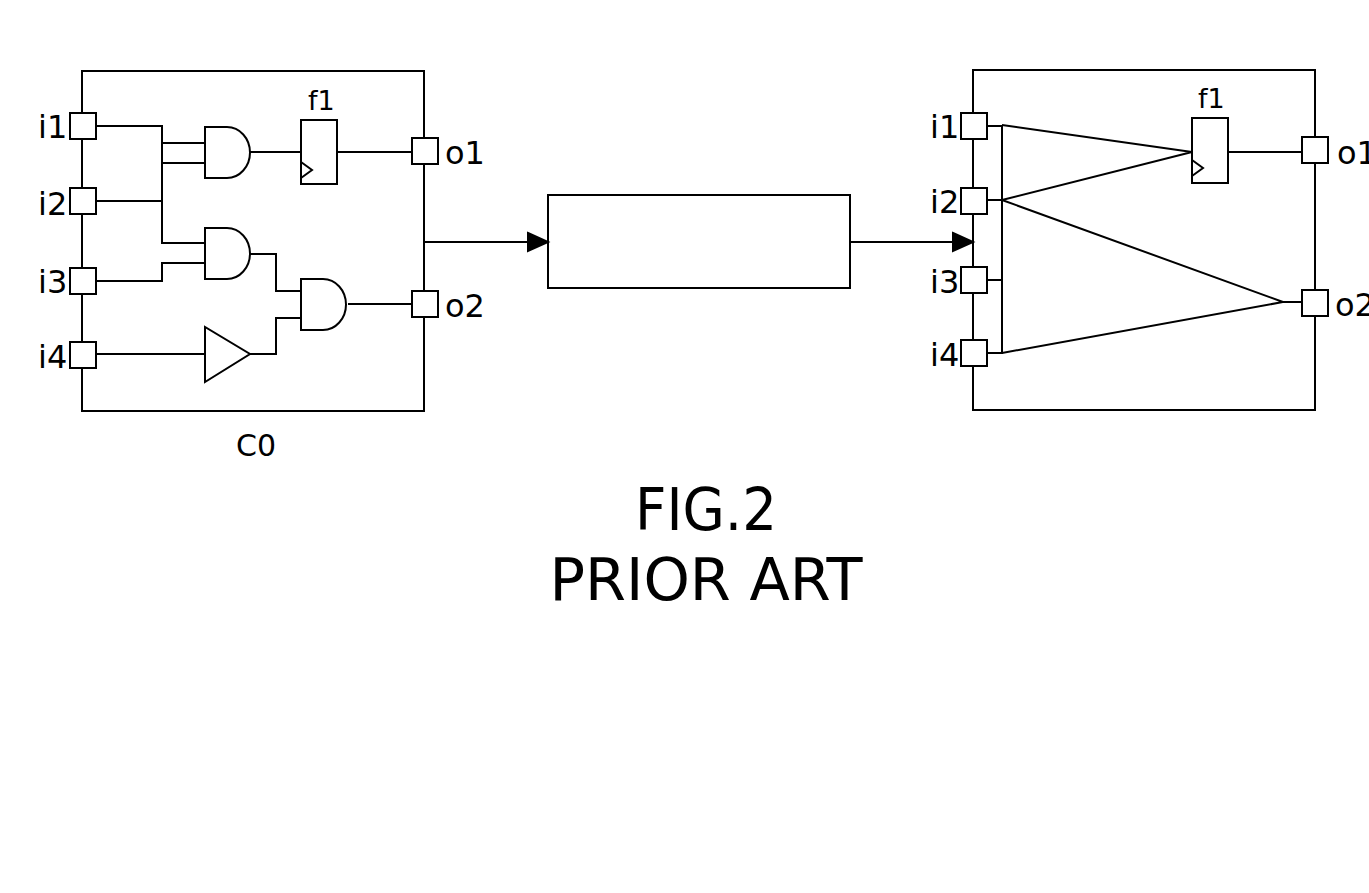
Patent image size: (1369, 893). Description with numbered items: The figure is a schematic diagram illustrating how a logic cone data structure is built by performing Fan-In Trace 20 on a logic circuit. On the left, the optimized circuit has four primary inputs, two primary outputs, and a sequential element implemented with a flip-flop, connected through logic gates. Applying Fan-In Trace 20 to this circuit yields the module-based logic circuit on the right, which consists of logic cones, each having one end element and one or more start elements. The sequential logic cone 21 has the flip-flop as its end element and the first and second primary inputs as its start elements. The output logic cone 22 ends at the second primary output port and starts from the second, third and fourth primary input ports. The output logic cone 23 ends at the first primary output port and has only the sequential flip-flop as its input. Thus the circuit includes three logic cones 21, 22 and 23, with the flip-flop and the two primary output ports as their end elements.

The Fan-In Trace 20 is at (788, 210).
The sequential logic cone 21 is at (1060, 143).
The output logic cone 22 is at (1077, 320).
The output logic cone 23 is at (1273, 148).